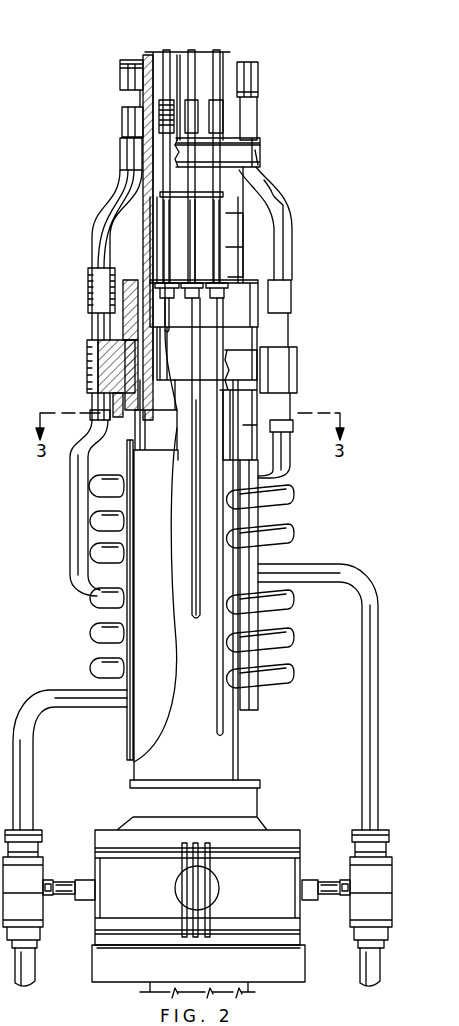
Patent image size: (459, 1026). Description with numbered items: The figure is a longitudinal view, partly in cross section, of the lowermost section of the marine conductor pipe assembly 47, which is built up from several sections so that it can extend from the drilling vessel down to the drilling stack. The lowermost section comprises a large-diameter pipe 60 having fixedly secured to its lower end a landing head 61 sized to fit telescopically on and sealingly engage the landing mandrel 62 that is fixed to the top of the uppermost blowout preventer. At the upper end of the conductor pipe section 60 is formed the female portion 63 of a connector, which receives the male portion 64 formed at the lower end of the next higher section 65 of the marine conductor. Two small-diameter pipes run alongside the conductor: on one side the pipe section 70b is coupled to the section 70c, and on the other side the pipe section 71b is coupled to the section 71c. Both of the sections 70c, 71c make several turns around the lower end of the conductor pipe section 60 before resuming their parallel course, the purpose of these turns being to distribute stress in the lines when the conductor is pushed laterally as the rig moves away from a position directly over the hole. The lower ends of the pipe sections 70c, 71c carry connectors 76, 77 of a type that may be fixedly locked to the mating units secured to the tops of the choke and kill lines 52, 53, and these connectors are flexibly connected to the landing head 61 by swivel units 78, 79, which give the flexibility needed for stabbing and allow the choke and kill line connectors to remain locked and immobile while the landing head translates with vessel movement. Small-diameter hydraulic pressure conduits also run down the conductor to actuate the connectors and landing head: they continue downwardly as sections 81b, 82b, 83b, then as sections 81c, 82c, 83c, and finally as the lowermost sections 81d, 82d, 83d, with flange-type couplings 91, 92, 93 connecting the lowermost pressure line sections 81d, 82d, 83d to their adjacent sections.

The marine conductor pipe assembly 47 is at (275, 117).
The pressure line section 81b is at (166, 53).
The pressure line section 82b is at (198, 55).
The pressure line section 83b is at (214, 70).
The next higher section of the marine conductor 65 is at (235, 203).
The small-diameter pipe section 70b is at (117, 207).
The pressure line section 81c is at (172, 253).
The female portion of connector 63 is at (250, 295).
The flange-type coupling 91 is at (173, 282).
The flange-type coupling 92 is at (196, 282).
The flange-type coupling 93 is at (226, 290).
The lowermost pressure line section 81d is at (178, 326).
The pressure line section 82c is at (193, 223).
The pressure line section 83c is at (215, 235).
The male portion of connector 64 is at (245, 241).
The small-diameter pipe section 71b is at (286, 268).
The large-diameter pipe 60 is at (205, 758).
The lowermost pressure line section 82d is at (196, 456).
The lowermost pressure line section 83d is at (217, 487).
The small-diameter pipe section 70c is at (74, 487).
The small-diameter pipe section 71c is at (286, 448).
The connector 76 is at (38, 855).
The connector 77 is at (355, 857).
The choke and kill line 52 is at (32, 968).
The choke and kill line 53 is at (364, 957).
The landing head 61 is at (258, 893).
The swivel unit 78 is at (58, 882).
The swivel unit 79 is at (333, 884).
The landing mandrel 62 is at (163, 988).